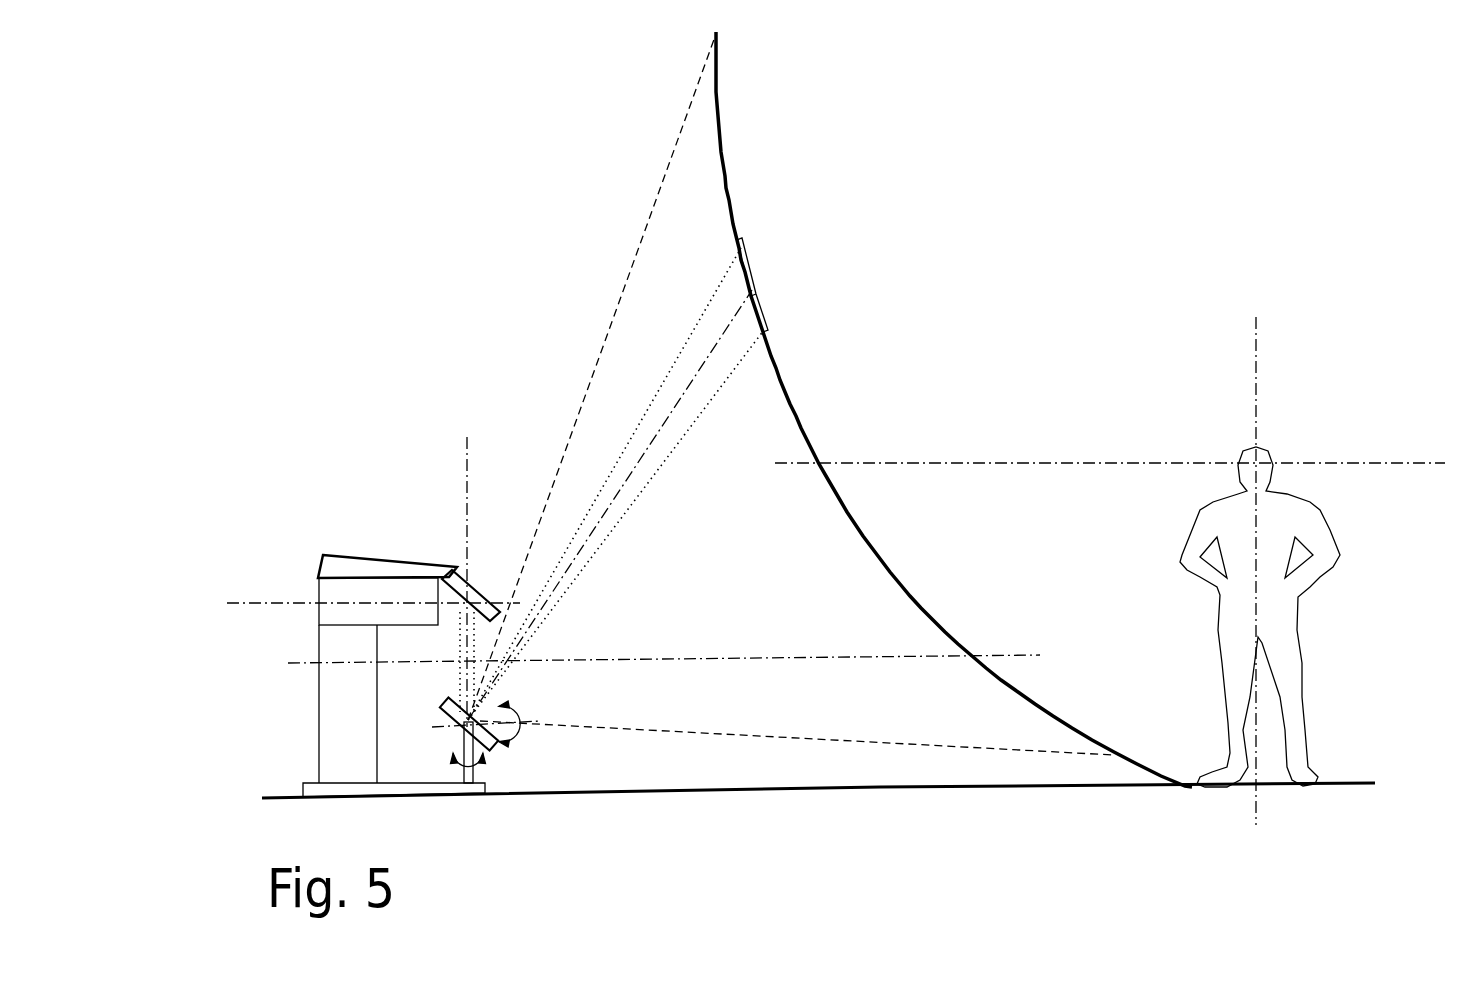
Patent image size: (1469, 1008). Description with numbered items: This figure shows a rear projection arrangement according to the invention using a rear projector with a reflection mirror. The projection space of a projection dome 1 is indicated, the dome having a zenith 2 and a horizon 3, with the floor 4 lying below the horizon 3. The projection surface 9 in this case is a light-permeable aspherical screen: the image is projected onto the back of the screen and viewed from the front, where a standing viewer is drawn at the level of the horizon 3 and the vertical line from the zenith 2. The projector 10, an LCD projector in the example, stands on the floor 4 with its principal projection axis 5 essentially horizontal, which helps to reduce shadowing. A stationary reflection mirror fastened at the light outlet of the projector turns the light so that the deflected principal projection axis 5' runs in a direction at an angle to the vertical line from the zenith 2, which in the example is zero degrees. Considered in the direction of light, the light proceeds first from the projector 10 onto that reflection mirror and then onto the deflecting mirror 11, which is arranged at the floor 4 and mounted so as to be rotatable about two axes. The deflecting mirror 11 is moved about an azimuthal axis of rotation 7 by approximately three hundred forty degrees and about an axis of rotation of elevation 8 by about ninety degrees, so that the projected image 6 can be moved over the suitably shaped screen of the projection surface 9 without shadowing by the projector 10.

The projection dome 1 is at (847, 517).
The zenith 2 is at (1257, 338).
The horizon 3 is at (1323, 463).
The floor 4 is at (822, 790).
The principal projection axis 5 is at (366, 569).
The principal projection axis 5' is at (500, 571).
The projected image 6 is at (764, 329).
The azimuthal axis of rotation 7 is at (455, 767).
The axis of rotation of elevation 8 is at (513, 730).
The projection surface 9 is at (733, 193).
The projector 10 is at (357, 592).
The deflecting mirror 11 is at (480, 750).